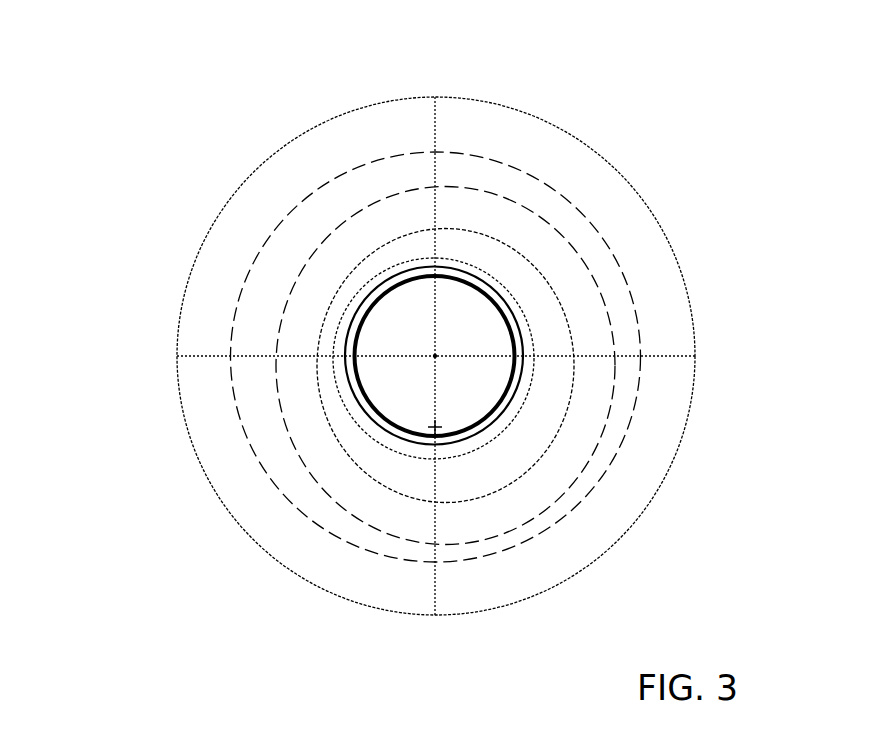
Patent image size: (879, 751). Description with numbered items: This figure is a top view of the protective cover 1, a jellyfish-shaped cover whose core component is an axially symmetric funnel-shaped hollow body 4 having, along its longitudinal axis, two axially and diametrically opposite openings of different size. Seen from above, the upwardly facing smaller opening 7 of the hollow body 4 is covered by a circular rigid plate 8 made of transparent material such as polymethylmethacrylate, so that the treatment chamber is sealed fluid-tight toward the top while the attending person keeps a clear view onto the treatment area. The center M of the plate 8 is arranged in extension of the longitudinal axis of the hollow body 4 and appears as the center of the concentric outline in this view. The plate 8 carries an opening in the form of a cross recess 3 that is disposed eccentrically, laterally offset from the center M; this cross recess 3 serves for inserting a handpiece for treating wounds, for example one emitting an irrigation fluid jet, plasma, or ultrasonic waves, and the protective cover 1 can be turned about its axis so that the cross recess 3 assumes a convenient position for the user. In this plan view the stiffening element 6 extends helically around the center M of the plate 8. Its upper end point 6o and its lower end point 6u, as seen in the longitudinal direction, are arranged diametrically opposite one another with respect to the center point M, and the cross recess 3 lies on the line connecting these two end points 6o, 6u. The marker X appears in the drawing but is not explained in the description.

The protective cover 1 is at (436, 309).
The cross recess 3 is at (432, 425).
The funnel-shaped hollow body 4 is at (578, 518).
The stiffening element 6 is at (312, 450).
The upper end point of stiffening element 6o is at (442, 265).
The lower end point of stiffening element 6u is at (432, 547).
The smaller opening 7 is at (372, 297).
The plate 8 is at (468, 387).
The center of plate M is at (437, 353).
The axis marker X is at (554, 313).